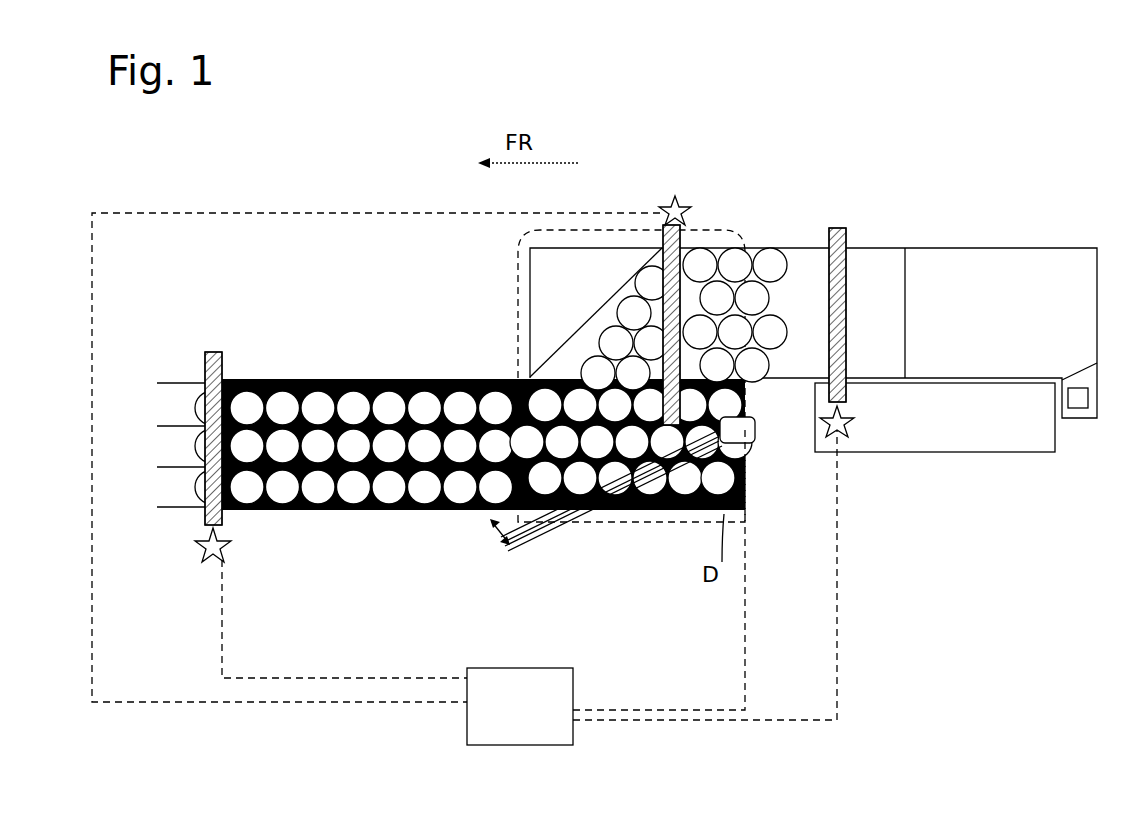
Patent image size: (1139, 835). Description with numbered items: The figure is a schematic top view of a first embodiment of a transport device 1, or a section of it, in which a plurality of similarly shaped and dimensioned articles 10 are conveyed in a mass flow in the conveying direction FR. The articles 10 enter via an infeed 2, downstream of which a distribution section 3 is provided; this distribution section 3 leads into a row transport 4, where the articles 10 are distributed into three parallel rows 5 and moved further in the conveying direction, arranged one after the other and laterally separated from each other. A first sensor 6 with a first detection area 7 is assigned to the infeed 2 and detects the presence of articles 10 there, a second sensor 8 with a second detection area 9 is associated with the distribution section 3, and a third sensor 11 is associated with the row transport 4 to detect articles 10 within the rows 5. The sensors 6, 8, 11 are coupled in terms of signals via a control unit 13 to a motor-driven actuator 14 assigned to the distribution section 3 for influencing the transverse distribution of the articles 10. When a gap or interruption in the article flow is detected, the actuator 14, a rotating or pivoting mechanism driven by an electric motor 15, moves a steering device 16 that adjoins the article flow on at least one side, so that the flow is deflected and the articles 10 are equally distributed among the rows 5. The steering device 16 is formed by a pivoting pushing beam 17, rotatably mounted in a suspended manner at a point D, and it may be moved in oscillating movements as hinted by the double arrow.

The transport device 1 is at (292, 750).
The infeed 2 is at (855, 312).
The distribution section 3 is at (636, 228).
The row transport 4 is at (458, 378).
The parallel rows 5 is at (410, 378).
The first sensor 6 is at (841, 433).
The first detection area 7 is at (840, 228).
The second sensor 8 is at (681, 205).
The second detection area 9 is at (683, 265).
The articles 10 is at (733, 262).
The third sensor 11 is at (213, 560).
The control unit 13 is at (531, 719).
The actuator 14 is at (742, 508).
The electric motor 15 is at (755, 441).
The steering device 16 is at (573, 522).
The pushing beam 17 is at (573, 522).